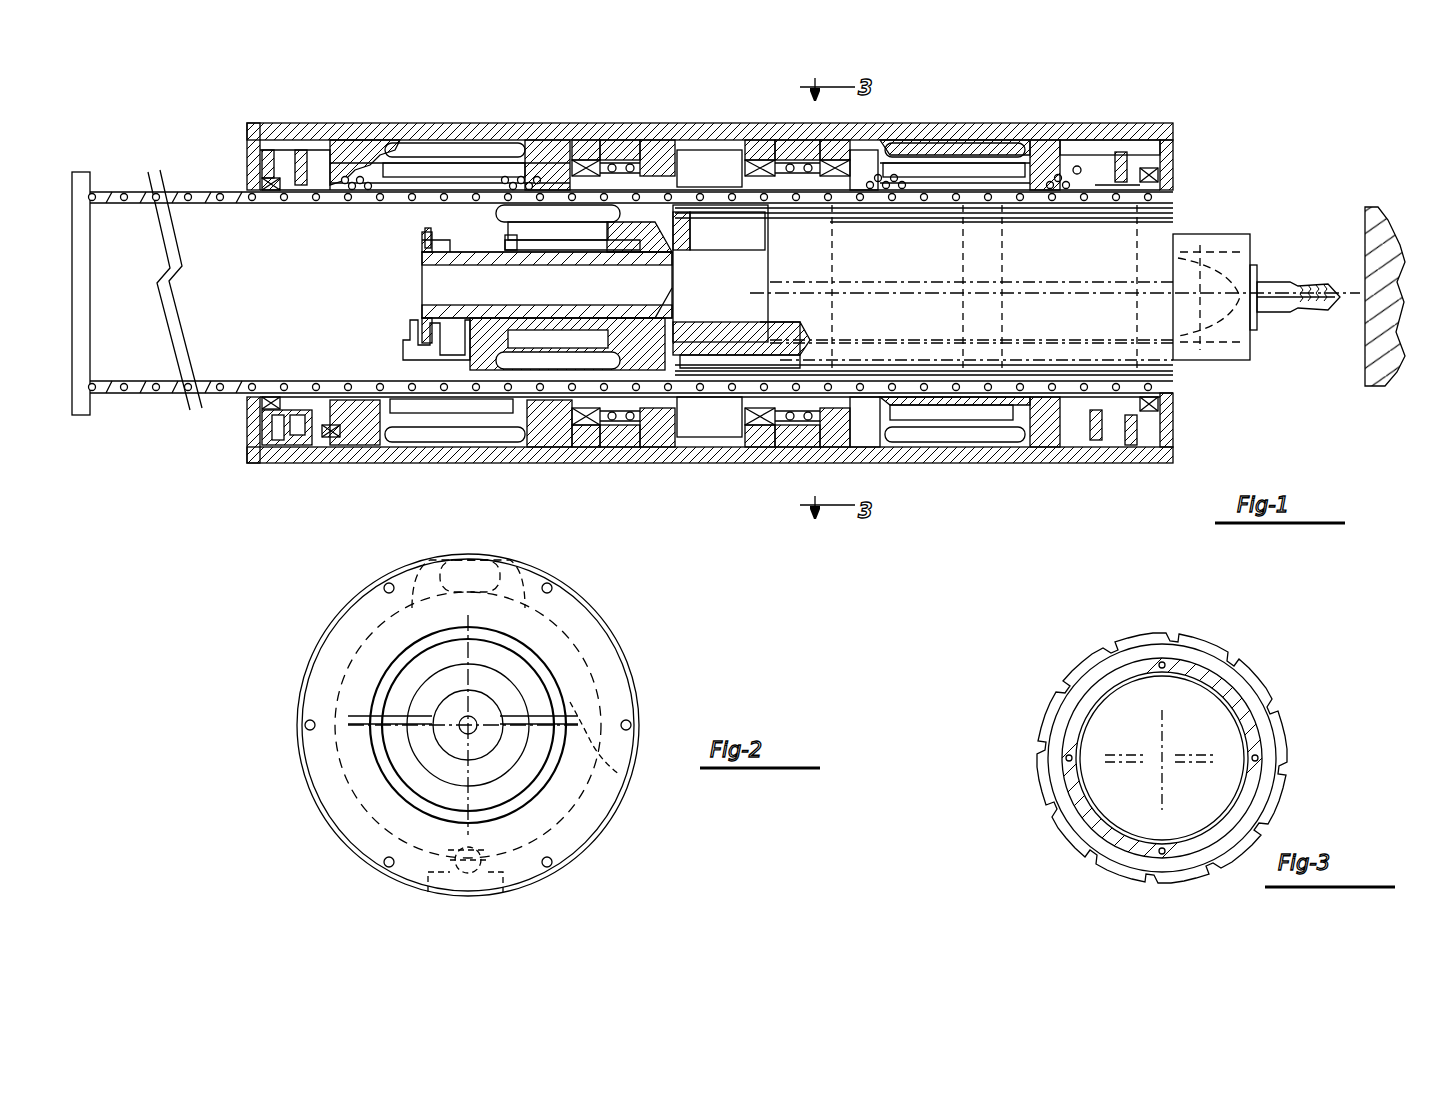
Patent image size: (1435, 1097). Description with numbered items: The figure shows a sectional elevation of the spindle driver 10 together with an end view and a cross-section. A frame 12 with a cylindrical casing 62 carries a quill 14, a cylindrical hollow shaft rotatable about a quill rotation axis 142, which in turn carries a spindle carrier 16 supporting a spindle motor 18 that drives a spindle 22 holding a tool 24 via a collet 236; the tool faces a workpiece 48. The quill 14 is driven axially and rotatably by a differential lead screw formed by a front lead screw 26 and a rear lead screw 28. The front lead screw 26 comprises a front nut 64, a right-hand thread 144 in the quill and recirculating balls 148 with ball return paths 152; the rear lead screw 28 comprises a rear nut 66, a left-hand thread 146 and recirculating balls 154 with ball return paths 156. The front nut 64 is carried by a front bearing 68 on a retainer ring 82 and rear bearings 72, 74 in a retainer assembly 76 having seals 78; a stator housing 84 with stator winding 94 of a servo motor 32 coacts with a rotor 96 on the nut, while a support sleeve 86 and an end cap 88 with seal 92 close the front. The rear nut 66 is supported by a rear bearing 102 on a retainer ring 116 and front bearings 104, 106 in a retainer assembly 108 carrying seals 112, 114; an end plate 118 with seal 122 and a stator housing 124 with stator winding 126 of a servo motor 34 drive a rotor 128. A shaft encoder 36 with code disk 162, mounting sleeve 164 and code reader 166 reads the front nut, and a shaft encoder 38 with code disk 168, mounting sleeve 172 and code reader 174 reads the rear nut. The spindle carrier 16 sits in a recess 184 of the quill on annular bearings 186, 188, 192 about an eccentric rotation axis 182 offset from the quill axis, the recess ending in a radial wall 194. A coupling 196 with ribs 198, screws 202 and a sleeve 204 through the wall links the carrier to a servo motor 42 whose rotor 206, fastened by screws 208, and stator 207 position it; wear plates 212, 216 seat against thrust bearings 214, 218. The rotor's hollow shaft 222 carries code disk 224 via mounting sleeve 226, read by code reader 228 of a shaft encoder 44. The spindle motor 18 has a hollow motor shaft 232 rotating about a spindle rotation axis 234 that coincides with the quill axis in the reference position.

In FIG. 1, the spindle driver 10 is at (1128, 40).
In FIG. 2, the spindle driver 10 is at (655, 610).
In FIG. 1, the frame 12 is at (678, 120).
In FIG. 1, the quill 14 is at (838, 205).
In FIG. 2, the quill 14 is at (395, 775).
In FIG. 3, the quill 14 is at (1245, 725).
In FIG. 1, the spindle carrier 16 is at (1048, 269).
In FIG. 3, the spindle carrier 16 is at (1205, 731).
In FIG. 1, the spindle motor 18 is at (1235, 232).
In FIG. 2, the spindle motor 18 is at (445, 680).
In FIG. 1, the spindle 22 is at (1255, 282).
In FIG. 2, the spindle 22 is at (495, 680).
In FIG. 1, the tool 24 is at (1262, 298).
In FIG. 2, the tool 24 is at (425, 740).
In FIG. 1, the front lead screw 26 is at (992, 215).
In FIG. 1, the rear lead screw 28 is at (322, 250).
In FIG. 1, the servo motor 32 is at (895, 158).
In FIG. 1, the servo motor 34 is at (372, 152).
In FIG. 1, the shaft encoder 36 is at (1175, 160).
In FIG. 1, the shaft encoder 38 is at (275, 160).
In FIG. 1, the servo motor 42 is at (505, 243).
In FIG. 1, the shaft encoder 44 is at (355, 304).
In FIG. 1, the workpiece 48 is at (1395, 245).
In FIG. 1, the cylindrical casing 62 is at (880, 180).
In FIG. 1, the front nut 64 is at (958, 205).
In FIG. 3, the front nut 64 is at (1285, 760).
In FIG. 1, the rear nut 66 is at (345, 200).
In FIG. 1, the front bearing 68 is at (1120, 150).
In FIG. 1, the rear bearing 72 is at (810, 205).
In FIG. 1, the rear bearing 74 is at (778, 210).
In FIG. 1, the retainer assembly 76 is at (800, 150).
In FIG. 1, the seals 78 is at (760, 150).
In FIG. 1, the retainer ring 82 is at (1146, 165).
In FIG. 1, the stator housing 84 is at (1005, 142).
In FIG. 1, the support sleeve 86 is at (1065, 143).
In FIG. 2, the support sleeve 86 is at (570, 592).
In FIG. 1, the end cap 88 is at (1175, 432).
In FIG. 2, the end cap 88 is at (620, 672).
In FIG. 1, the seal 92 is at (1175, 192).
In FIG. 1, the stator winding 94 is at (995, 440).
In FIG. 1, the rotor 96 is at (960, 430).
In FIG. 1, the rear bearing 102 is at (300, 150).
In FIG. 1, the front bearing 104 is at (588, 440).
In FIG. 1, the front bearing 106 is at (655, 430).
In FIG. 1, the retainer assembly 108 is at (620, 440).
In FIG. 1, the seal 112 is at (675, 172).
In FIG. 1, the seal 114 is at (560, 430).
In FIG. 1, the retainer ring 116 is at (278, 125).
In FIG. 1, the end plate 118 is at (250, 130).
In FIG. 1, the seal 122 is at (262, 190).
In FIG. 1, the stator housing 124 is at (530, 140).
In FIG. 1, the stator winding 126 is at (515, 148).
In FIG. 1, the rotor 128 is at (440, 170).
In FIG. 1, the quill rotation axis 142 is at (1020, 295).
In FIG. 2, the quill rotation axis 142 is at (600, 770).
In FIG. 3, the quill rotation axis 142 is at (1165, 762).
In FIG. 1, the right-hand thread 144 is at (830, 430).
In FIG. 1, the left-hand thread 146 is at (290, 395).
In FIG. 1, the recirculating balls 148 is at (960, 172).
In FIG. 1, the ball return paths 152 is at (882, 190).
In FIG. 1, the recirculating balls 154 is at (400, 160).
In FIG. 1, the ball return paths 156 is at (500, 150).
In FIG. 1, the code disk 162 is at (1120, 440).
In FIG. 1, the mounting sleeve 164 is at (1175, 380).
In FIG. 1, the code reader 166 is at (1060, 440).
In FIG. 1, the code disk 168 is at (330, 198).
In FIG. 1, the mounting sleeve 172 is at (328, 392).
In FIG. 1, the code reader 174 is at (278, 450).
In FIG. 1, the eccentric rotation axis 182 is at (935, 292).
In FIG. 2, the eccentric rotation axis 182 is at (350, 715).
In FIG. 3, the eccentric rotation axis 182 is at (1158, 745).
In FIG. 1, the recess 184 is at (1065, 440).
In FIG. 1, the annular bearing 186 is at (1250, 332).
In FIG. 1, the annular bearing 188 is at (985, 343).
In FIG. 1, the annular bearing 192 is at (825, 345).
In FIG. 1, the radial wall 194 is at (709, 417).
In FIG. 1, the coupling 196 is at (690, 222).
In FIG. 1, the ribs 198 is at (715, 345).
In FIG. 1, the screws 202 is at (770, 435).
In FIG. 1, the sleeve 204 is at (655, 255).
In FIG. 1, the rotor 206 is at (582, 230).
In FIG. 1, the stator 207 is at (488, 422).
In FIG. 1, the screws 208 is at (542, 255).
In FIG. 1, the annular wear plate 212 is at (682, 250).
In FIG. 1, the thrust bearing 214 is at (628, 160).
In FIG. 1, the annular wear plate 216 is at (590, 158).
In FIG. 1, the thrust bearing 218 is at (736, 286).
In FIG. 1, the hollow shaft 222 is at (432, 268).
In FIG. 1, the code disk 224 is at (428, 235).
In FIG. 1, the mounting sleeve 226 is at (445, 265).
In FIG. 1, the code reader 228 is at (403, 346).
In FIG. 1, the motor shaft 232 is at (1200, 248).
In FIG. 1, the spindle rotation axis 234 is at (1342, 297).
In FIG. 1, the collet 236 is at (1300, 335).